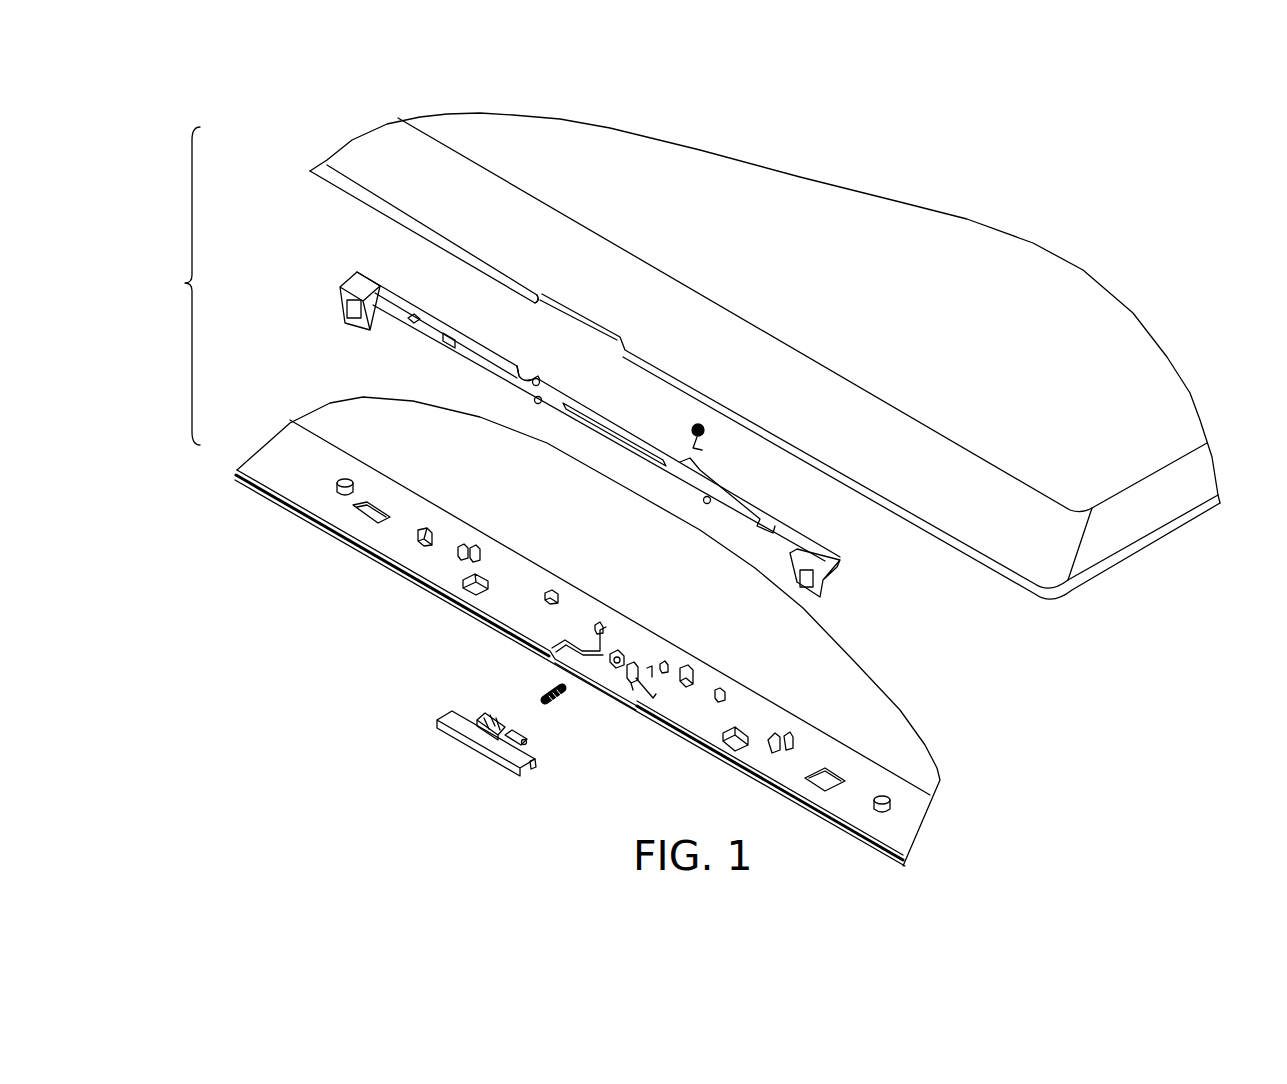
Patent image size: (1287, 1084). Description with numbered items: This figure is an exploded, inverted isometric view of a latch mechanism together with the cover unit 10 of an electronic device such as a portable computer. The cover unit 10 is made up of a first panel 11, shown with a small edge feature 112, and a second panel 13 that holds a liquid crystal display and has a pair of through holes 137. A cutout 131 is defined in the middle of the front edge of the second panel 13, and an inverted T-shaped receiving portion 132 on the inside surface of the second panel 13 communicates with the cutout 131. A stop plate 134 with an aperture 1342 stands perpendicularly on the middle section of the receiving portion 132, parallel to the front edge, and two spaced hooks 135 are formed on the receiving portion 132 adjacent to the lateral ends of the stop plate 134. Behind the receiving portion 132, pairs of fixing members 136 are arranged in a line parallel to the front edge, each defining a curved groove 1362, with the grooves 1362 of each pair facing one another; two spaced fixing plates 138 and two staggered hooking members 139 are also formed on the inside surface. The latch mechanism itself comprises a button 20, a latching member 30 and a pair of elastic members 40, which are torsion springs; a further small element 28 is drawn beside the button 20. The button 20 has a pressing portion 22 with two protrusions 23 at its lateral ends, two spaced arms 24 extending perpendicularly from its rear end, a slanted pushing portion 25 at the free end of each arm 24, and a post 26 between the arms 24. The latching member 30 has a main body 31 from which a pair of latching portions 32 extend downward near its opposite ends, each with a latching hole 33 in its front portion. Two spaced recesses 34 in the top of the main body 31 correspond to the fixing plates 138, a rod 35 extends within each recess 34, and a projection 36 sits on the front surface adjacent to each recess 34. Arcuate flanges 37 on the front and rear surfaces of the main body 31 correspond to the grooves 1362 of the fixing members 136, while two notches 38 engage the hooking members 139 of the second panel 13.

The cover unit 10 is at (175, 286).
The first panel 11 is at (709, 356).
The notch of cover 112 is at (563, 303).
The second panel 13 is at (569, 631).
The cutout 131 is at (600, 684).
The receiving portion 132 is at (622, 687).
The stop plate 134 is at (623, 662).
The aperture 1342 is at (616, 656).
The hooks 135 is at (637, 667).
The fixing members 136 is at (473, 553).
The curved groove 1362 is at (465, 547).
The through holes 137 is at (362, 518).
The fixing plates 138 is at (553, 594).
The hooking members 139 is at (424, 528).
The button 20 is at (432, 716).
The pressing portion 22 is at (502, 748).
The protrusions 23 is at (537, 764).
The arms 24 is at (487, 718).
The slanted pushing portion 25 is at (529, 740).
The post 26 is at (503, 727).
The spring 28 is at (548, 692).
The latching member 30 is at (850, 576).
The main body 31 is at (727, 504).
The latching portions 32 is at (338, 294).
The latching hole 33 is at (346, 316).
The recesses 34 is at (521, 377).
The rod 35 is at (541, 382).
The projection 36 is at (534, 400).
The arcuate flanges 37 is at (447, 343).
The notches 38 is at (409, 321).
The elastic members 40 is at (710, 434).